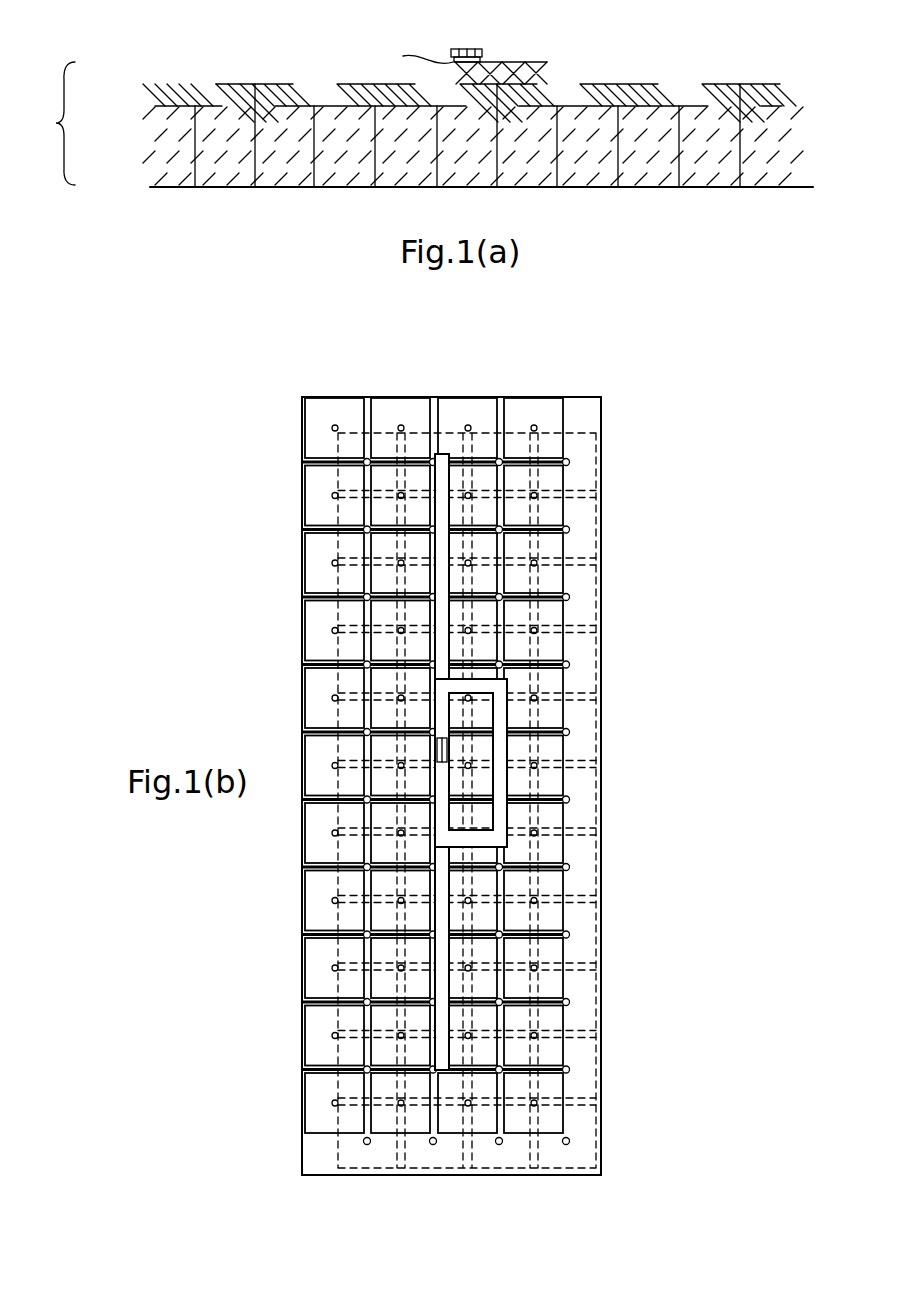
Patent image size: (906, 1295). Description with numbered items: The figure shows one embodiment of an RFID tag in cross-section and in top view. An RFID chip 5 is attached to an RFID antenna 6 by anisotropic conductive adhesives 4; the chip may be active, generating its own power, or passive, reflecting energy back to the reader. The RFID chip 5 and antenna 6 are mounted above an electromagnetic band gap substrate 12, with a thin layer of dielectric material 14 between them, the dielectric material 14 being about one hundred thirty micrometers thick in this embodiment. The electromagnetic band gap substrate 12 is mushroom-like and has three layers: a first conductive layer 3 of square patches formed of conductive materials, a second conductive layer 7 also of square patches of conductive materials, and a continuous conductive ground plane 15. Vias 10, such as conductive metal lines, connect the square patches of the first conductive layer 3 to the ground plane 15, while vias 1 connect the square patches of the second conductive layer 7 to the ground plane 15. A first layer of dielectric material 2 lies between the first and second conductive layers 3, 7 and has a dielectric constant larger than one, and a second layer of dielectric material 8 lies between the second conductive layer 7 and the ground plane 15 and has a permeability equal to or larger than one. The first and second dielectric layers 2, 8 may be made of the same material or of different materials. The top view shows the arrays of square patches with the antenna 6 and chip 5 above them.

In FIG. 1A, the vias 1 is at (192, 167).
In FIG. 1A, the first layer of dielectric material 2 is at (222, 95).
In FIG. 1A, the first conductive layer 3 is at (258, 84).
In FIG. 1B, the first conductive layer 3 is at (555, 418).
In FIG. 1A, the anisotropic conductive adhesives 4 is at (420, 58).
In FIG. 1A, the RFID chip 5 is at (466, 50).
In FIG. 1B, the RFID chip 5 is at (435, 750).
In FIG. 1A, the RFID antenna 6 is at (517, 62).
In FIG. 1B, the RFID antenna 6 is at (500, 820).
In FIG. 1A, the second conductive layer 7 is at (672, 107).
In FIG. 1B, the second conductive layer 7 is at (583, 472).
In FIG. 1A, the second layer of dielectric material 8 is at (725, 140).
In FIG. 1A, the vias 10 is at (490, 97).
In FIG. 1A, the electromagnetic band gap substrate 12 is at (49, 123).
In FIG. 1A, the dielectric material 14 is at (543, 72).
In FIG. 1A, the ground plane 15 is at (603, 189).